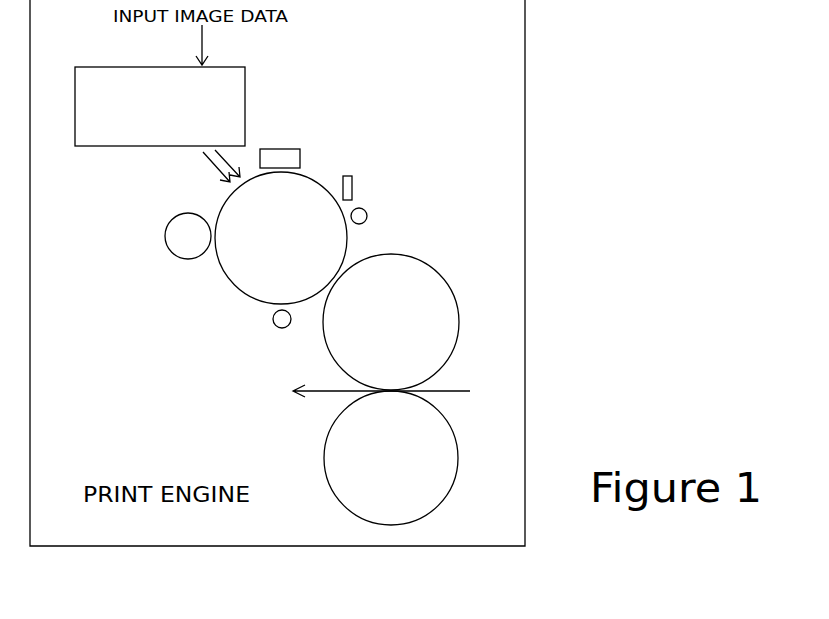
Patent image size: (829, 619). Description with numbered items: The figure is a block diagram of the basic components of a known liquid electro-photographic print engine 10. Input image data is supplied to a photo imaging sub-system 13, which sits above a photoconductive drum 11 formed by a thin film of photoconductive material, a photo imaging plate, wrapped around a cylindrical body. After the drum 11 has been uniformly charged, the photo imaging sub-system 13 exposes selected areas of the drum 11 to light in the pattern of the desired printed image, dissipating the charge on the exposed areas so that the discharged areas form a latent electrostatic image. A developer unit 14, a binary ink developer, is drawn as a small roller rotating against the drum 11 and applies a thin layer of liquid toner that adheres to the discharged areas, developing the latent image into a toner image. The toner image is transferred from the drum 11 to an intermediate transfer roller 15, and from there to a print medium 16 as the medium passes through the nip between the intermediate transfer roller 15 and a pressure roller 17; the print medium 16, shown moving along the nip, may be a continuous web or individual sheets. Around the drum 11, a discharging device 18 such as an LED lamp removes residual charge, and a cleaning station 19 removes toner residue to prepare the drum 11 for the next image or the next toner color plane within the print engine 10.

The LEP print engine 10 is at (550, 281).
The photoconductive drum 11 is at (281, 226).
The photo imaging sub-system 13 is at (245, 105).
The developer unit 14 is at (170, 253).
The intermediate transfer roller 15 is at (391, 322).
The print medium 16 is at (323, 393).
The pressure roller 17 is at (391, 458).
The discharging device 18 is at (274, 326).
The cleaning station 19 is at (352, 190).